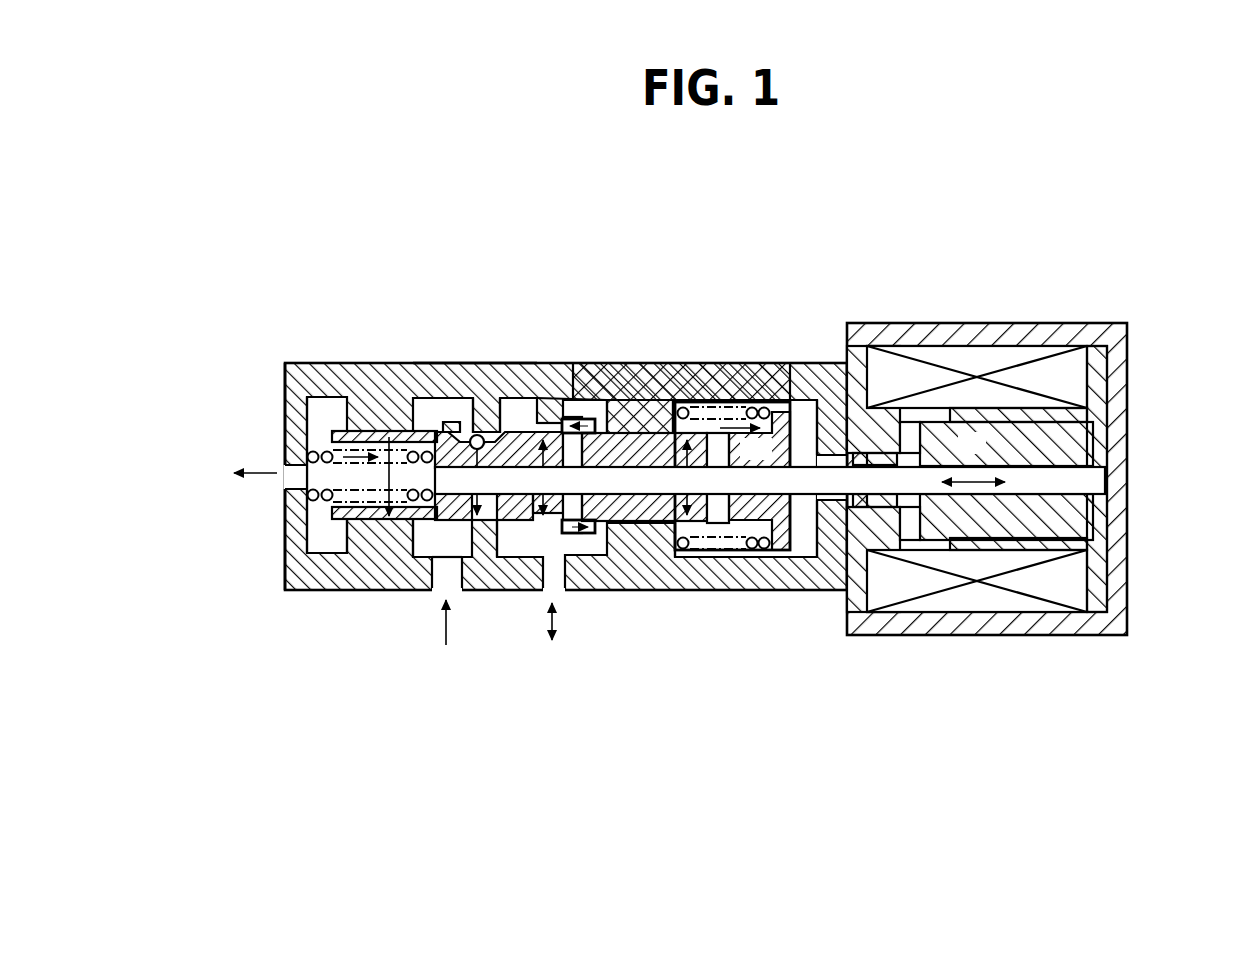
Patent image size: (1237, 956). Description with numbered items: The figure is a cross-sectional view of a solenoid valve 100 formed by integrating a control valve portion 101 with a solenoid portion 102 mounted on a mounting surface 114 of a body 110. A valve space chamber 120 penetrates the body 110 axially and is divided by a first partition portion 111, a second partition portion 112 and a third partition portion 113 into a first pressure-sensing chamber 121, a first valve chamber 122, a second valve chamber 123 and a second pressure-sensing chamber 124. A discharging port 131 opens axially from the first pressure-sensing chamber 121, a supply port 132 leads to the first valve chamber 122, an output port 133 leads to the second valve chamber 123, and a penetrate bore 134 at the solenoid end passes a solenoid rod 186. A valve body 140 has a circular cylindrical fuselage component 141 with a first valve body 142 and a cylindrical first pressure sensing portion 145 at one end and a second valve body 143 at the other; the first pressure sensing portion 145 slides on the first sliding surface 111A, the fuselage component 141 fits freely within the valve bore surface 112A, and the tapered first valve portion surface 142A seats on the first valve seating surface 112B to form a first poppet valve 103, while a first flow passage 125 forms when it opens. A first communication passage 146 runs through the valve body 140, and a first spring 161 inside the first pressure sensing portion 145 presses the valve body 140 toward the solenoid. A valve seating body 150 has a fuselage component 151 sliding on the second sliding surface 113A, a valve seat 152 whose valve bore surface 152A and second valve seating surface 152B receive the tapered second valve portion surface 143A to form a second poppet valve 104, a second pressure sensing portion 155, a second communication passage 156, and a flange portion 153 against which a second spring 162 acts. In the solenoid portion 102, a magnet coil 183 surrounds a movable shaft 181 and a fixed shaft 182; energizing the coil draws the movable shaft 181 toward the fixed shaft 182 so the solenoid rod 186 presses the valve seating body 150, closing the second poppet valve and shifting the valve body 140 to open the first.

The solenoid valve 100 is at (706, 469).
The control valve portion 101 is at (524, 468).
The solenoid portion 102 is at (1018, 537).
The first poppet valve 103 is at (418, 363).
The second poppet valve 104 is at (613, 363).
The body 110 is at (783, 593).
The first partition portion 111 is at (360, 530).
The first sliding surface 111A is at (338, 520).
The second partition portion 112 is at (483, 593).
The valve bore surface 112A is at (495, 363).
The first valve seating surface 112B is at (518, 363).
The third partition portion 113 is at (643, 593).
The second sliding surface 113A is at (690, 363).
The mounting surface 114 is at (847, 595).
The valve space chamber 120 is at (602, 593).
The first pressure-sensing chamber 121 is at (317, 545).
The first valve chamber 122 is at (420, 557).
The second valve chamber 123 is at (510, 593).
The second pressure-sensing chamber 124 is at (720, 593).
The first flow passage 125 is at (502, 593).
The discharging port 131 is at (290, 482).
The supply port 132 is at (440, 363).
The output port 133 is at (557, 363).
The penetrate bore 134 is at (833, 363).
The valve body 140 is at (393, 557).
The fuselage component 141 is at (535, 363).
The first valve body 142 is at (463, 363).
The first valve portion surface 142A is at (482, 363).
The second valve body 143 is at (603, 363).
The second valve portion surface 143A is at (633, 363).
The first pressure sensing portion 145 is at (353, 363).
The first communication passage 146 is at (400, 363).
The valve seating body 150 is at (672, 511).
The fuselage component 151 is at (667, 593).
The valve seat 152 is at (650, 363).
The valve bore surface 152A is at (580, 593).
The second valve seating surface 152B is at (523, 593).
The flange portion 153 is at (800, 363).
The second pressure sensing portion 155 is at (760, 363).
The second communication passage 156 is at (612, 593).
The first spring 161 is at (325, 503).
The second spring 162 is at (750, 593).
The movable shaft 181 is at (1080, 440).
The fixed shaft 182 is at (870, 522).
The magnet coil 183 is at (1067, 585).
The solenoid rod 186 is at (1080, 476).